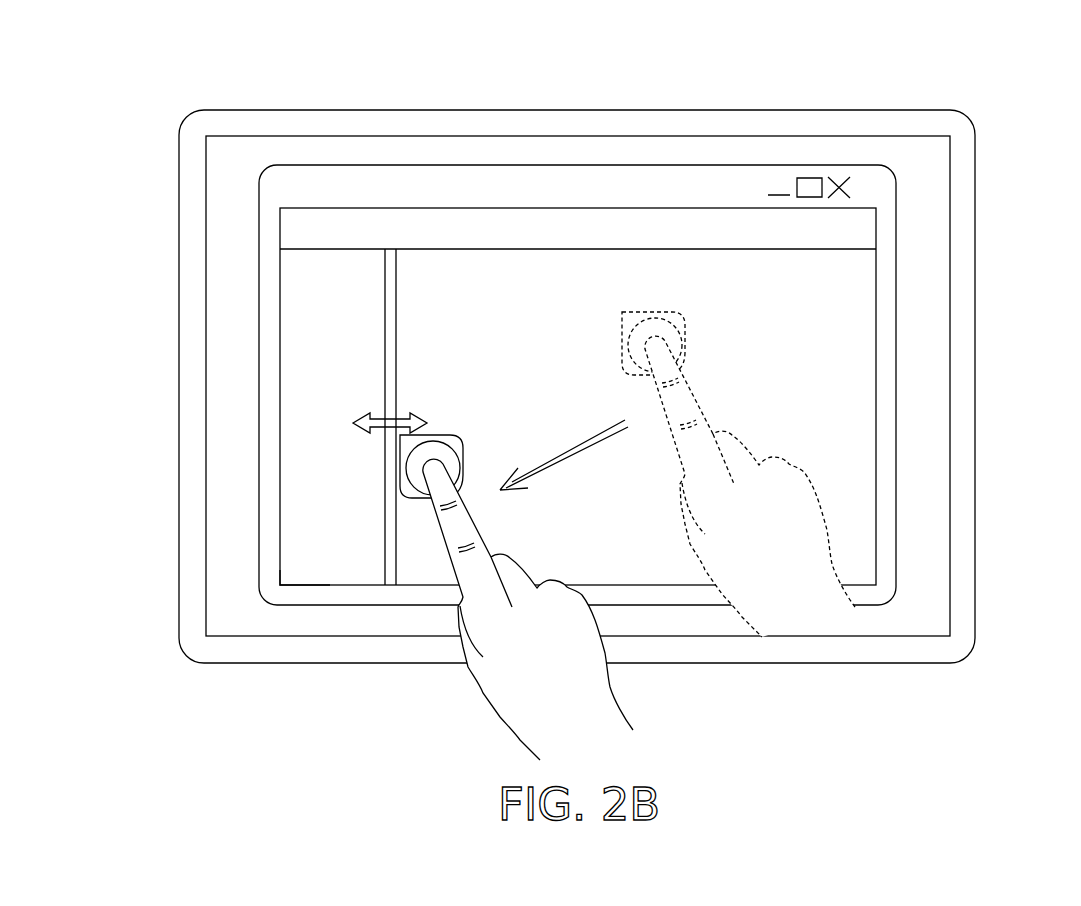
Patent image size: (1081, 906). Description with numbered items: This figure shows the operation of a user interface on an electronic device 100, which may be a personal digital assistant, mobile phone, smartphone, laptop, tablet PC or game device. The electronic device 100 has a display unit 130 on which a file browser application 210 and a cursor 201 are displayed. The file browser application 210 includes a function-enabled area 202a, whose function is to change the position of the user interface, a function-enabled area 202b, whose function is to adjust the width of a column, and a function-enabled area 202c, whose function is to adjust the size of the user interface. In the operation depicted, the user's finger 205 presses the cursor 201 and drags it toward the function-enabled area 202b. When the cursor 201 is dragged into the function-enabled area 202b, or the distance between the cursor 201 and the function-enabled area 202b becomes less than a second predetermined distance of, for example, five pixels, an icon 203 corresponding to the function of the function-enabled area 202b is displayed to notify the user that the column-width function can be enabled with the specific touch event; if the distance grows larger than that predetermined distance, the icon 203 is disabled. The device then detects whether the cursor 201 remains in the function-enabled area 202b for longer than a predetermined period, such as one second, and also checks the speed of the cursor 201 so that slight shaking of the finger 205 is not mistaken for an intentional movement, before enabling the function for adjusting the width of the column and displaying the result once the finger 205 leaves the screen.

The electronic device 100 is at (977, 186).
The display unit 130 is at (952, 284).
The file browser application 210 is at (897, 385).
The function-enabled area 202a is at (578, 183).
The function-enabled area 202b is at (385, 336).
The function-enabled area 202c is at (263, 600).
The icon 203 is at (353, 423).
The cursor 201 is at (458, 443).
The user's finger 205 is at (490, 707).